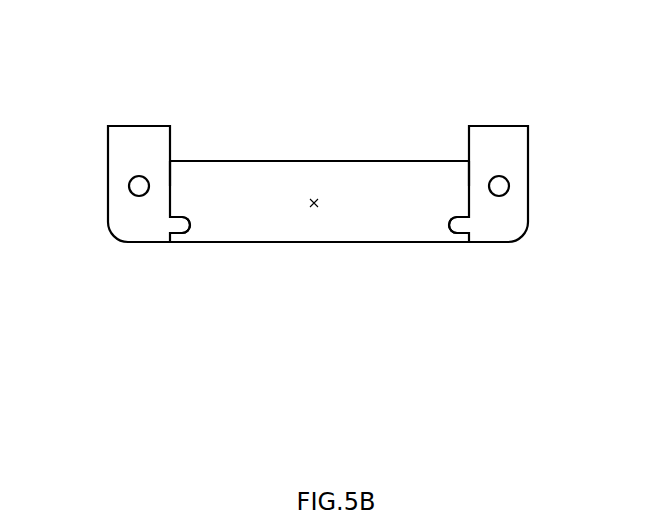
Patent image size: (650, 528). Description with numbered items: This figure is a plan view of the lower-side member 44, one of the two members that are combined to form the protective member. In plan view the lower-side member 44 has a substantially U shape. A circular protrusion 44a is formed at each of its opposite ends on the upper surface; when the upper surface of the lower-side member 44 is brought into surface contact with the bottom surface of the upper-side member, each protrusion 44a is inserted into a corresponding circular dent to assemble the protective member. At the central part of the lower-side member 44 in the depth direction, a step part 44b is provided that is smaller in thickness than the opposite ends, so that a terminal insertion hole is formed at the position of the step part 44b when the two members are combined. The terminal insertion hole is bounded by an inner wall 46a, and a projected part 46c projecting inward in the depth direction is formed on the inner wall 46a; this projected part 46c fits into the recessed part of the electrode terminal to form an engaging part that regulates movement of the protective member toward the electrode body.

The lower-side member 44 is at (64, 61).
The circular protrusion 44a is at (134, 196).
The step part 44b is at (316, 208).
The inner wall 46a is at (172, 185).
The projected part 46c is at (186, 234).